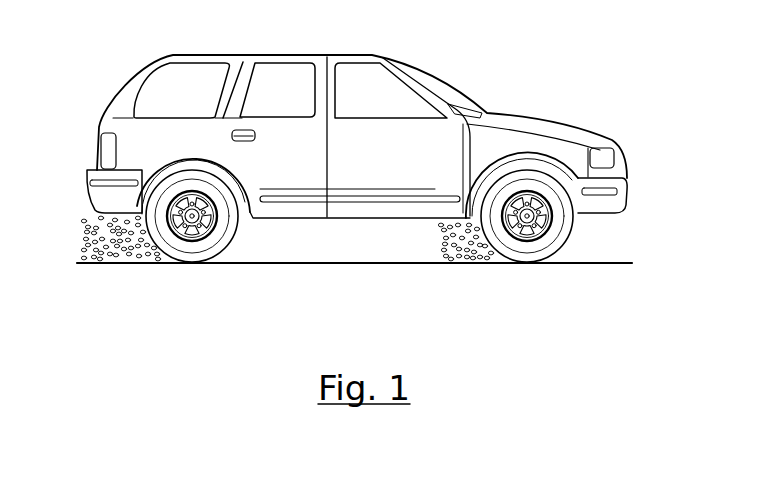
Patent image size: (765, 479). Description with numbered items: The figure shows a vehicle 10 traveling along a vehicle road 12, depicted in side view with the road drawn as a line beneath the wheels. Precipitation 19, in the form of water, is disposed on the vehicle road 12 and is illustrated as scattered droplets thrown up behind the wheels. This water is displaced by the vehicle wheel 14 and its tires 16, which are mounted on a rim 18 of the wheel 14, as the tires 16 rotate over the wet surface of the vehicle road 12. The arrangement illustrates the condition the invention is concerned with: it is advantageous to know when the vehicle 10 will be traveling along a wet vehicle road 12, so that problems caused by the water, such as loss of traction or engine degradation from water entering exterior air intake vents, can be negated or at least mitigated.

The vehicle 10 is at (440, 81).
The vehicle road 12 is at (242, 264).
The vehicle wheel 14 is at (527, 262).
The tire 16 is at (556, 242).
The rim 18 is at (549, 213).
The precipitation 19 is at (470, 255).